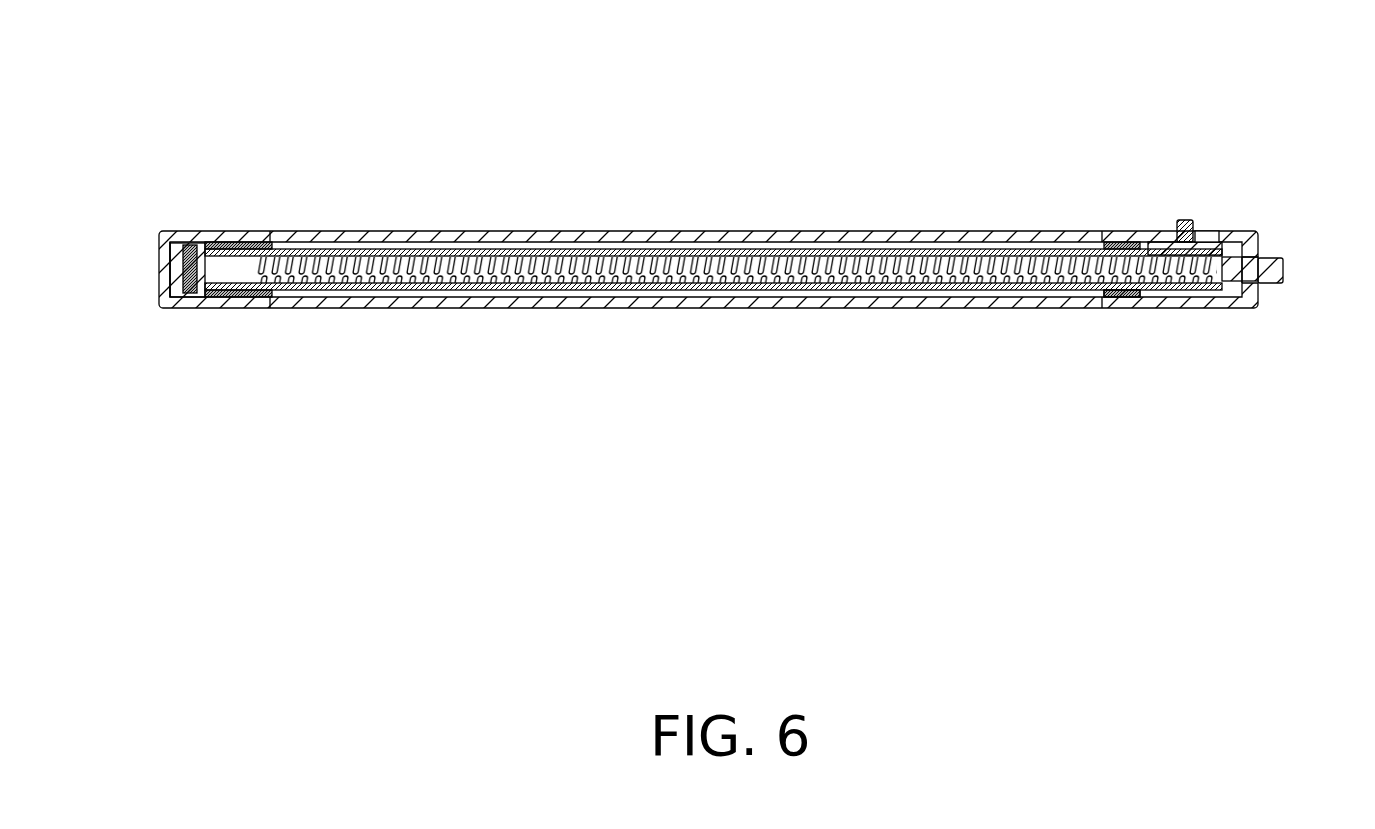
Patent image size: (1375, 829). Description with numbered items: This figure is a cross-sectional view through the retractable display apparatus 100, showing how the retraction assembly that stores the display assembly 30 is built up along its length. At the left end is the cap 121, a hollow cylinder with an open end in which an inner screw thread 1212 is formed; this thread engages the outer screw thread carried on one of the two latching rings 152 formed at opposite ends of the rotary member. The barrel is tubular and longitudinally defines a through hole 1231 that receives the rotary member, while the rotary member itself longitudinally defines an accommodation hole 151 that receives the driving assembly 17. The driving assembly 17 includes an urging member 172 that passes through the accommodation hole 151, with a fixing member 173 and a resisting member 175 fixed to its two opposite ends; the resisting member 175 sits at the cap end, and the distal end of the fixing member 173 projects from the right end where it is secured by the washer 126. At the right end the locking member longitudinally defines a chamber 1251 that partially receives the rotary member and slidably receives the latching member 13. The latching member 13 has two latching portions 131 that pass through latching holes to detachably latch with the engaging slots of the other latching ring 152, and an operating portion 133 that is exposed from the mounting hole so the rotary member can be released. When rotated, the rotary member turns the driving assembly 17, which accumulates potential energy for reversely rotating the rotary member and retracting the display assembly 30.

The retractable display apparatus 100 is at (732, 37).
The cap 121 is at (187, 238).
The inner screw thread 1212 is at (175, 243).
The resisting member 175 is at (178, 277).
The latching rings 152 is at (233, 303).
The through hole 1231 is at (962, 247).
The latching member 13 is at (1269, 156).
The operating portion 133 is at (1181, 221).
The latching portions 131 is at (1212, 230).
The washer 126 is at (1262, 246).
The accommodation hole 151 is at (737, 277).
The display assembly 30 is at (837, 290).
The chamber 1251 is at (1150, 293).
The urging member 172 is at (1216, 290).
The fixing member 173 is at (1273, 283).
The driving assembly 17 is at (1317, 368).